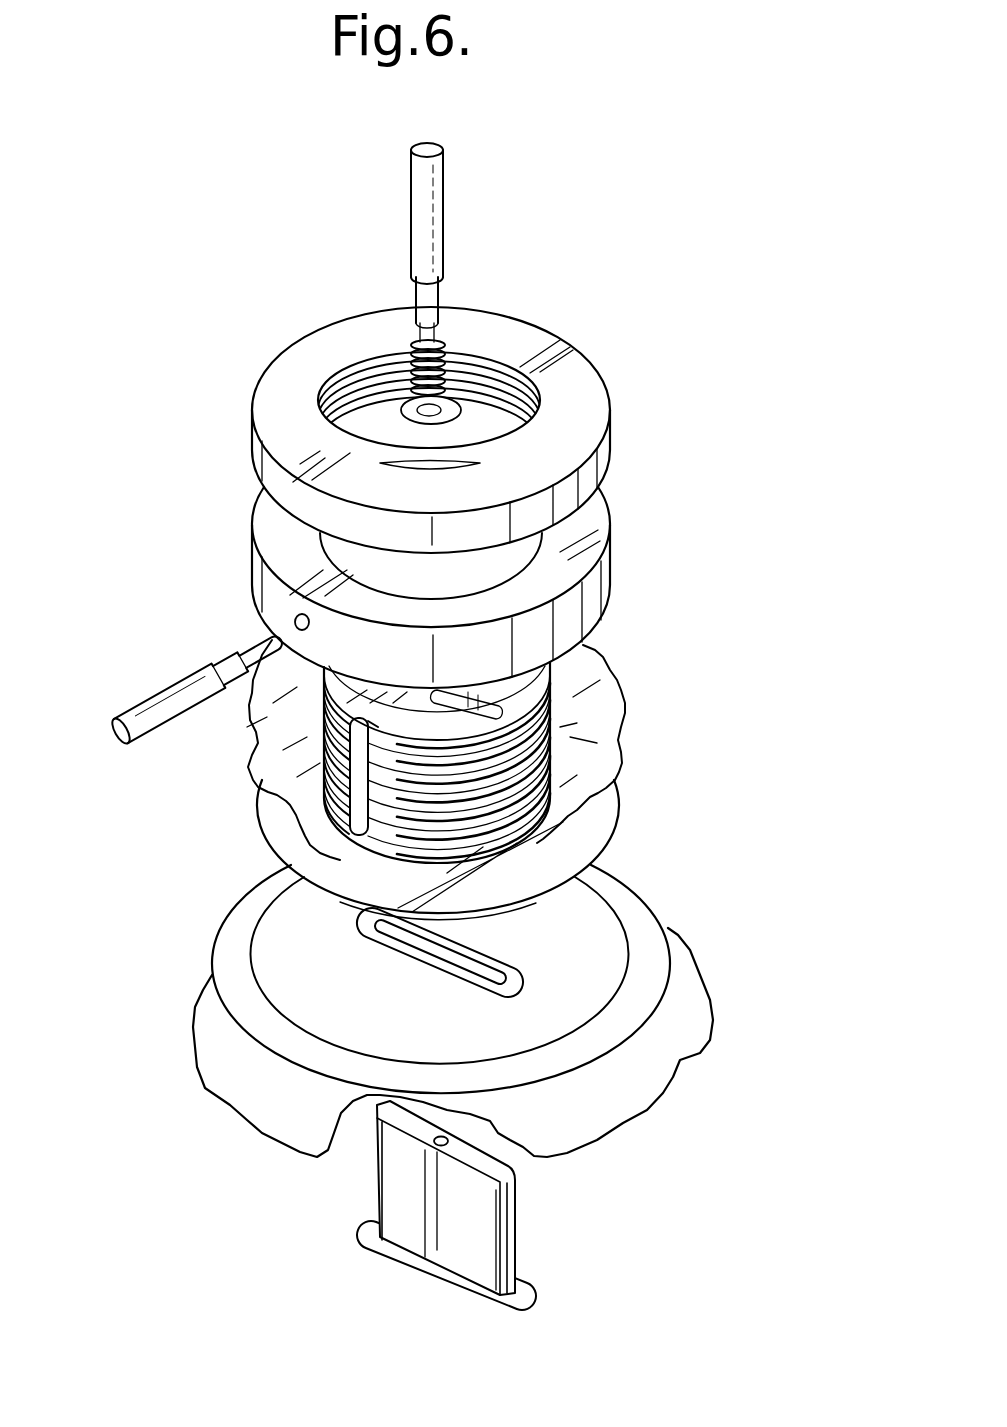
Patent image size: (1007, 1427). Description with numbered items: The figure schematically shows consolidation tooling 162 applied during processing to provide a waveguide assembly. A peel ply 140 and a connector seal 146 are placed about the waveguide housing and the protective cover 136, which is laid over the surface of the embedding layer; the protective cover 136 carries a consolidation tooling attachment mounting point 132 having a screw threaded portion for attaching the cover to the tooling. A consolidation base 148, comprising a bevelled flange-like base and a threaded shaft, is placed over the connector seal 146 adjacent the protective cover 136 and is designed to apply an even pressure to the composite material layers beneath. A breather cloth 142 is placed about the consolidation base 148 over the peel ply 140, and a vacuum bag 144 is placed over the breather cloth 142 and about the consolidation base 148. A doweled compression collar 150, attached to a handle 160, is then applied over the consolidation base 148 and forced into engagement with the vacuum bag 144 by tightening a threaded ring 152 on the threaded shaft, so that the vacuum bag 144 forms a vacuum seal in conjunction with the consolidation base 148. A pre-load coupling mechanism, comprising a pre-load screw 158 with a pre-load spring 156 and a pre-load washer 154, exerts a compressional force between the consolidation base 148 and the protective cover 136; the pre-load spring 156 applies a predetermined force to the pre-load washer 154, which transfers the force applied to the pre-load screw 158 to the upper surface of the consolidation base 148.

The consolidation tooling attachment mounting point 132 is at (437, 1144).
The protective cover 136 is at (473, 1213).
The peel ply 140 is at (260, 1112).
The breather cloth 142 is at (257, 775).
The vacuum bag 144 is at (267, 723).
The connector seal 146 is at (597, 927).
The consolidation base 148 is at (612, 812).
The doweled compression collar 150 is at (612, 567).
The threaded ring 152 is at (563, 377).
The pre-load washer 154 is at (405, 403).
The pre-load spring 156 is at (440, 353).
The pre-load screw 158 is at (442, 182).
The handle 160 is at (168, 695).
The consolidation tooling 162 is at (227, 374).